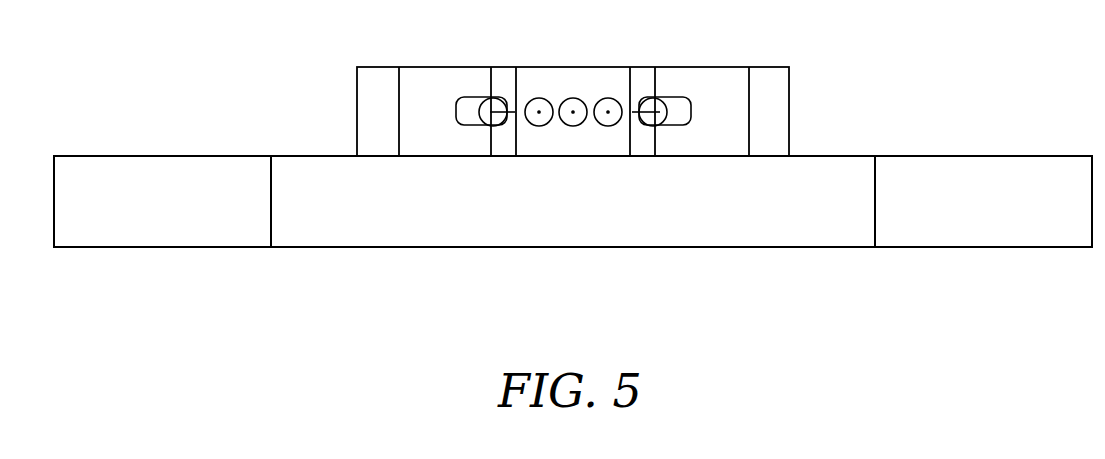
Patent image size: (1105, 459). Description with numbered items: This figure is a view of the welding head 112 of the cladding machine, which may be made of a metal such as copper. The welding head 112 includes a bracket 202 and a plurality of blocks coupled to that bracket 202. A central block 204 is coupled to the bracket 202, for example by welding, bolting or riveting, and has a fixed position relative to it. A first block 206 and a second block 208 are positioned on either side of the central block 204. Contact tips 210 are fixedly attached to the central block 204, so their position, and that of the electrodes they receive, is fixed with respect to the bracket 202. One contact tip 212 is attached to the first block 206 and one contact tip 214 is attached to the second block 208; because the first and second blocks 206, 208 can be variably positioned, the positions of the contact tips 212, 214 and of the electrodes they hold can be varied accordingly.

The welding head 112 is at (904, 301).
The bracket 202 is at (379, 226).
The central block 204 is at (572, 140).
The first block 206 is at (419, 92).
The second block 208 is at (733, 92).
The contact tips 210 is at (608, 97).
The contact tip 212 is at (475, 98).
The contact tip 214 is at (670, 98).